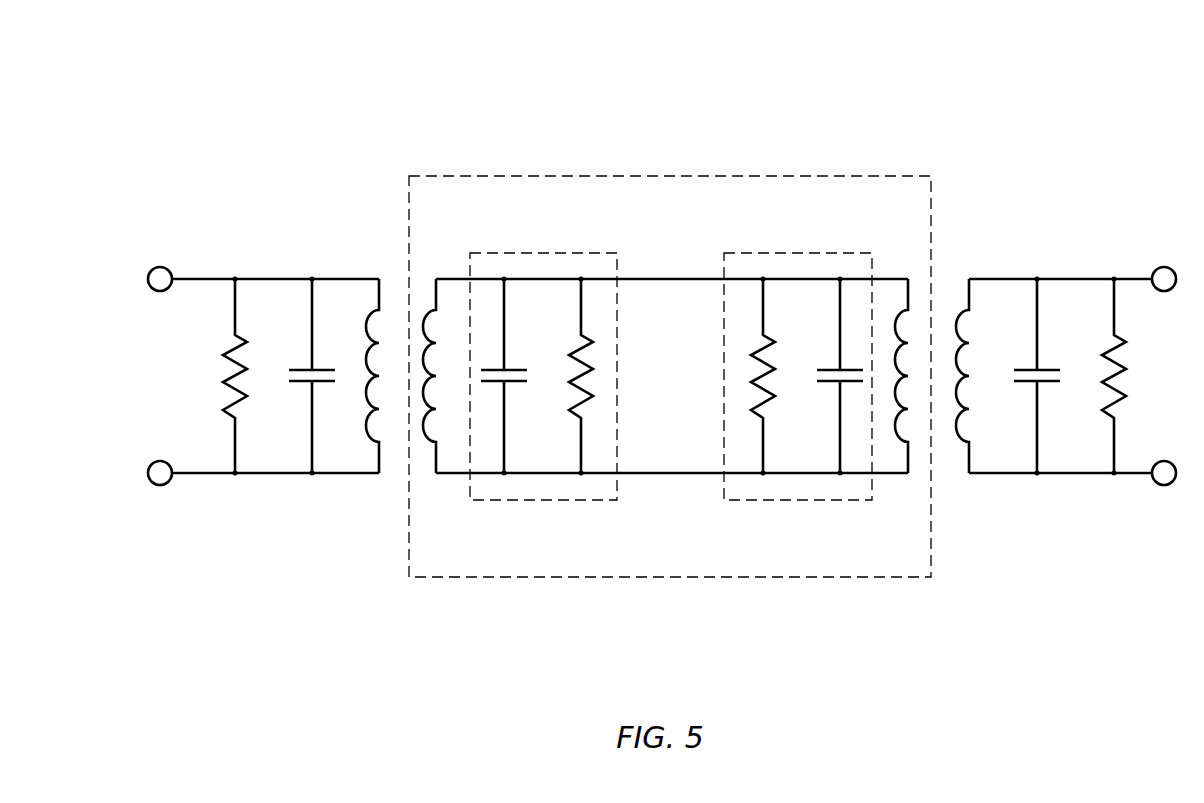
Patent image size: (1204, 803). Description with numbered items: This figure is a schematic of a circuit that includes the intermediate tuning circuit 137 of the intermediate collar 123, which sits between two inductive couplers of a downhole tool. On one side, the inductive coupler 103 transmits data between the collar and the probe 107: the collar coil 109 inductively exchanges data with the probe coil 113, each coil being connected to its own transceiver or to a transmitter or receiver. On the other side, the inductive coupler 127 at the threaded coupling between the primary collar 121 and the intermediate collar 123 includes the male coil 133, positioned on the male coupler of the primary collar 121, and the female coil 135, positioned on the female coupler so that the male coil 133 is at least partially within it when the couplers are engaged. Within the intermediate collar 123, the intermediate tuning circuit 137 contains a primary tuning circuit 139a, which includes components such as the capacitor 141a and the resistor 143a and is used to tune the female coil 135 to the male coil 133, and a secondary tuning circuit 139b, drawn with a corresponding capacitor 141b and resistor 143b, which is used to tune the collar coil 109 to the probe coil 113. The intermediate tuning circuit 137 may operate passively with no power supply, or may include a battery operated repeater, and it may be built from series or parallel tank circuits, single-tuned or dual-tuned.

The inductive coupler 103 is at (379, 108).
The probe 107 is at (271, 502).
The probe coil 113 is at (360, 308).
The collar coil 109 is at (425, 312).
The intermediate collar 123 is at (572, 603).
The intermediate tuning circuit 137 is at (722, 577).
The primary tuning circuit 139a is at (827, 501).
The secondary tuning circuit 139b is at (567, 501).
The capacitor 141a is at (850, 370).
The capacitor 141b is at (515, 368).
The resistor 143a is at (767, 335).
The resistor 143b is at (585, 333).
The female coil 135 is at (897, 310).
The inductive coupler 127 is at (994, 185).
The male coil 133 is at (959, 310).
The primary collar 121 is at (1094, 488).